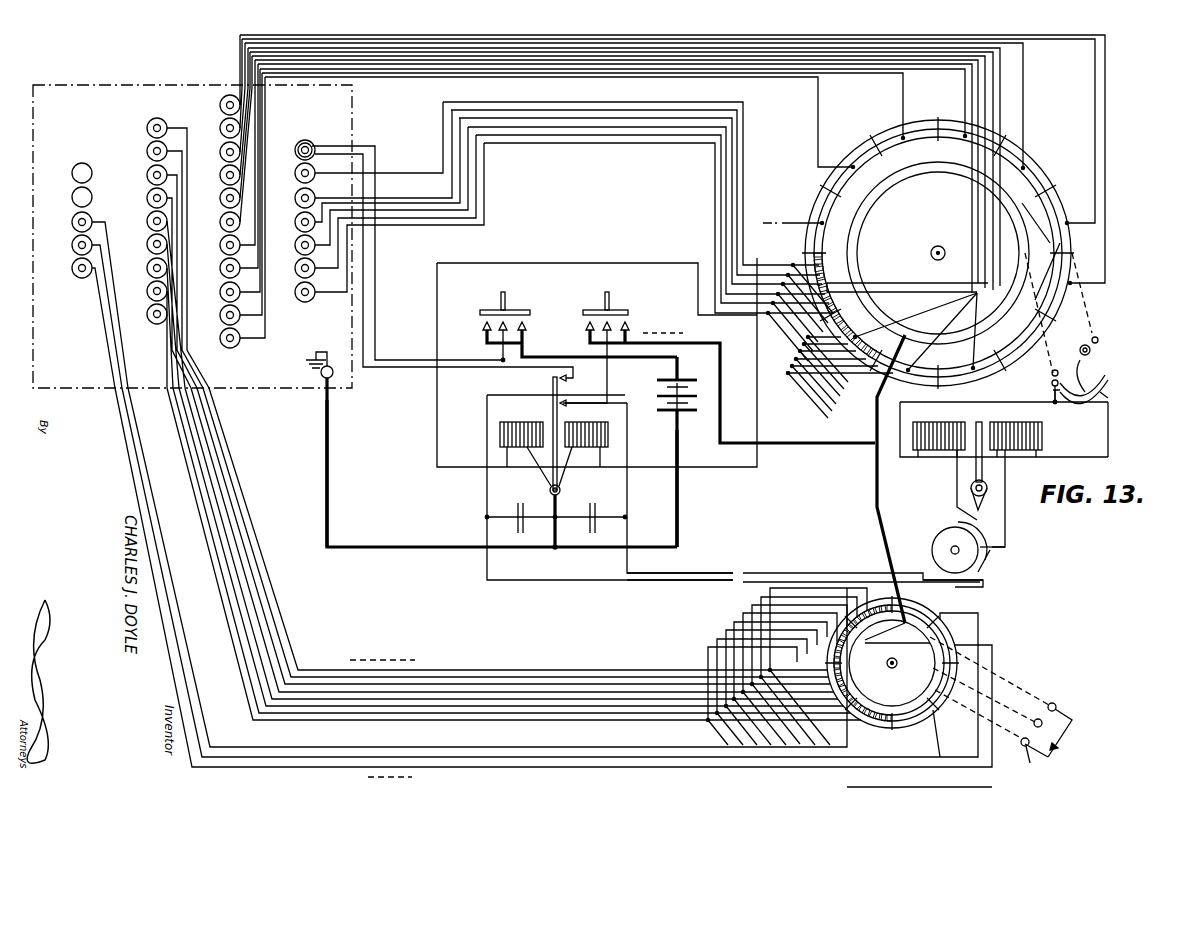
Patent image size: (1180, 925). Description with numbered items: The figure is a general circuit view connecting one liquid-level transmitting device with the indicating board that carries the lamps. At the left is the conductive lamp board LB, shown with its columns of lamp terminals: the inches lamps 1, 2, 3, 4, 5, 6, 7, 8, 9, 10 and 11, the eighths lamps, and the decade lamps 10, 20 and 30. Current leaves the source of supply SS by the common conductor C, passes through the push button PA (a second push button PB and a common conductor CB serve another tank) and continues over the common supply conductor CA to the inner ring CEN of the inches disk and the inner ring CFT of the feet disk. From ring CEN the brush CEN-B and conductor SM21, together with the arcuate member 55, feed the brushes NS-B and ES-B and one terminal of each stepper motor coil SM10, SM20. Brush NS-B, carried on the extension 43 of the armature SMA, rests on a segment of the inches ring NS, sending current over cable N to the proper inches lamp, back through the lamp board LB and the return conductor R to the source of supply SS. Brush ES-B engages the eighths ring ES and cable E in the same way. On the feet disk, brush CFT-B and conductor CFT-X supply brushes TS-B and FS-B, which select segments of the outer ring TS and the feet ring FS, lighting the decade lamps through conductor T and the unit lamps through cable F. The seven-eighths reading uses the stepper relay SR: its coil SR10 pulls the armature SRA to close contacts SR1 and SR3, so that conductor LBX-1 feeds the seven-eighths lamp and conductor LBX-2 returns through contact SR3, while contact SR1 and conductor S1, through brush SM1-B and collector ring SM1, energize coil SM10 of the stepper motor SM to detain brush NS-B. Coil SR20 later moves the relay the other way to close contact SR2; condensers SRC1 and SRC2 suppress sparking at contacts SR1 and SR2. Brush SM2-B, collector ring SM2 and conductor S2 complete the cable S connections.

The lamp board LB is at (84, 388).
The cable N is at (528, 80).
The cable E is at (568, 146).
The conductor LBX-1 is at (420, 358).
The conductor LBX-2 is at (385, 378).
The push button PA is at (487, 310).
The push button PB is at (590, 310).
The common conductor CB is at (648, 332).
The common conductor C is at (662, 385).
The source of supply SS is at (660, 400).
The stepper relay SR is at (597, 362).
The contact SR1 is at (612, 408).
The contact SR2 is at (543, 388).
The contact SR3 is at (566, 382).
The armature SRA is at (550, 408).
The coil SR20 is at (528, 450).
The coil SR10 is at (587, 450).
The condenser SRC2 is at (508, 511).
The condenser SRC1 is at (588, 511).
The return conductor R is at (332, 490).
The cable S is at (667, 565).
The conductor S1 is at (708, 575).
The conductor S2 is at (705, 588).
The common supply conductor CA is at (840, 440).
The eighths segment ring ES is at (1032, 165).
The innermost ring CEN is at (1038, 190).
The inches segment ring NS is at (1050, 208).
The extension 43 is at (1088, 338).
The brush ES-B is at (1092, 342).
The brush NS-B is at (1093, 352).
The brush CEN-B is at (1100, 380).
The arcuate member 55 is at (1100, 398).
The stepper motor SM is at (1004, 429).
The conductor SM21 is at (1025, 395).
The coil SM20 is at (950, 418).
The coil SM10 is at (1030, 420).
The armature SMA is at (985, 440).
The collector ring SM1 is at (945, 528).
The collector ring SM2 is at (1000, 535).
The brush SM2-B is at (985, 565).
The brush SM1-B is at (985, 583).
The cable F is at (508, 732).
The conductor T is at (510, 745).
The inner ring CFT is at (892, 700).
The feet ring FS is at (935, 605).
The outer ring TS is at (960, 635).
The brush TS-B is at (1058, 703).
The brush FS-B is at (1045, 724).
The common conductor CFT-X is at (1055, 748).
The brush CFT-B is at (1028, 765).
The inches lamp 1 is at (225, 303).
The inches lamp 2 is at (225, 280).
The unit lamp 3 is at (225, 257).
The inches lamp 4 is at (225, 233).
The inches lamp 5 is at (225, 209).
The inches lamp 6 is at (225, 186).
The inches lamp 7 is at (187, 186).
The inches lamp 8 is at (187, 163).
The inches lamp 9 is at (187, 140).
The decade lamp 10 is at (146, 198).
The inches lamp 11 is at (221, 105).
The decade lamp 20 is at (72, 245).
The decade lamp 30 is at (72, 222).